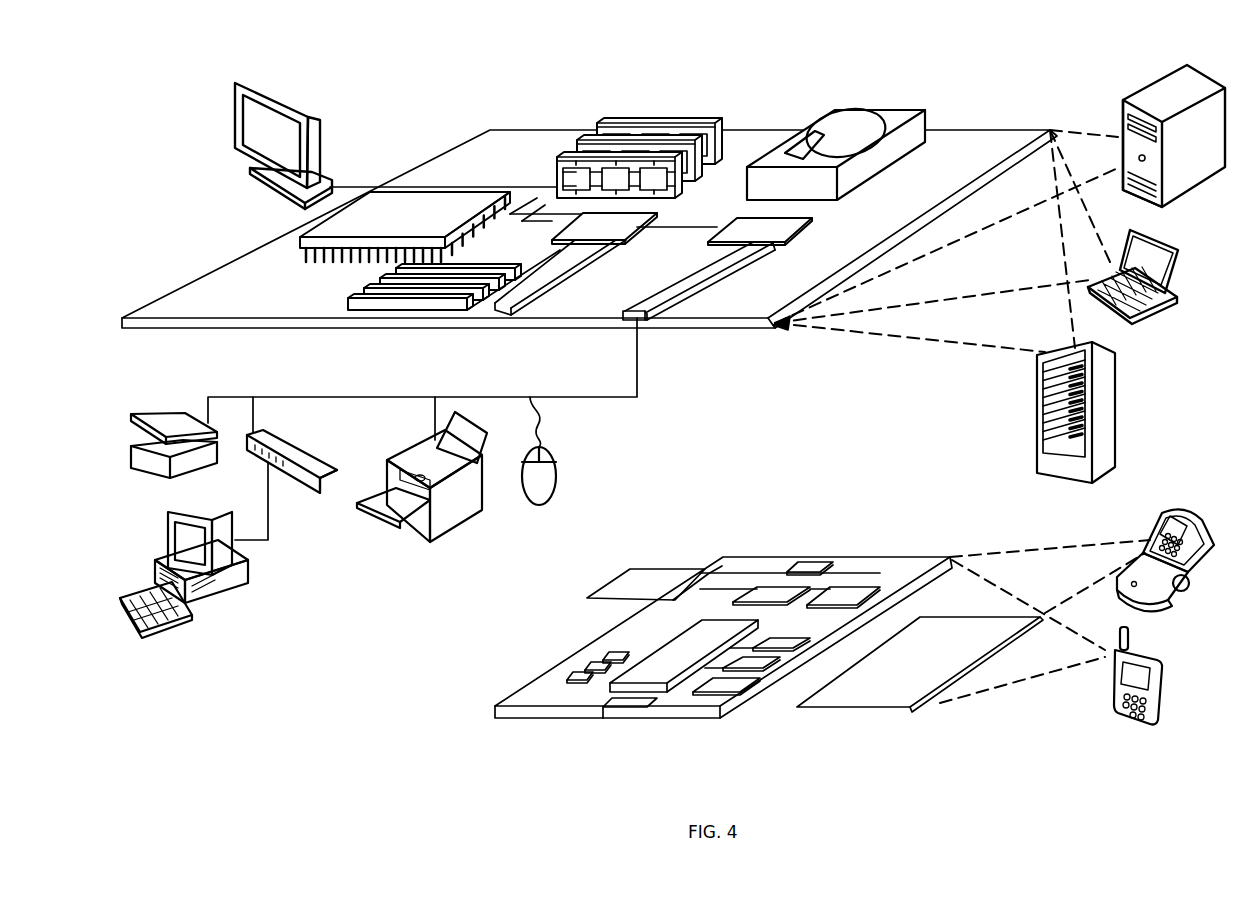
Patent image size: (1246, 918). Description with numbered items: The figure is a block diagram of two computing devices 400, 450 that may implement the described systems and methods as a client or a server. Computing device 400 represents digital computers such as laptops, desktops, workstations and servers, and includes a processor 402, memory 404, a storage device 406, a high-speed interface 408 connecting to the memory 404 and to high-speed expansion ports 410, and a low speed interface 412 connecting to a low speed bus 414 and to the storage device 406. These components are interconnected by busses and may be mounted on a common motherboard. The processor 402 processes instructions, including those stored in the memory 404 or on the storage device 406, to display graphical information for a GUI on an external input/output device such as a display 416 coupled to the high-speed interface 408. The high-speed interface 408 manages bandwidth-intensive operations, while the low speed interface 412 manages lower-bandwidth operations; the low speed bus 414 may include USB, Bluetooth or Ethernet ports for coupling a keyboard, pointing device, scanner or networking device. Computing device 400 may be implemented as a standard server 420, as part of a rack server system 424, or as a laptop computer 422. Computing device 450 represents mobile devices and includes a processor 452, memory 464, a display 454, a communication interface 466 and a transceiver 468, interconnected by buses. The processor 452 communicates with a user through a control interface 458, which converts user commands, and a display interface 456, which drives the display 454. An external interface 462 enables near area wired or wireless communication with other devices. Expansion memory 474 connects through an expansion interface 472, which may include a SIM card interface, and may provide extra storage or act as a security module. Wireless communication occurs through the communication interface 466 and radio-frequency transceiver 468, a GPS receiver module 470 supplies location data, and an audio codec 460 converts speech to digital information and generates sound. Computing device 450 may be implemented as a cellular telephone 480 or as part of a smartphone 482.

The computing device 400 is at (420, 102).
The processor 402 is at (302, 240).
The memory 404 is at (605, 138).
The storage device 406 is at (830, 115).
The high-speed interface 408 is at (580, 225).
The high-speed expansion ports 410 is at (365, 293).
The low speed interface 412 is at (738, 225).
The low speed bus 414 is at (650, 320).
The display 416 is at (236, 82).
The standard server 420 is at (1123, 115).
The laptop computer 422 is at (1178, 252).
The rack server system 424 is at (1037, 436).
The computing device 450 is at (476, 720).
The processor 452 is at (662, 682).
The display 454 is at (882, 690).
The display interface 456 is at (723, 690).
The control interface 458 is at (750, 666).
The audio codec 460 is at (780, 643).
The external interface 462 is at (626, 710).
The memory 464 is at (590, 674).
The communication interface 466 is at (770, 595).
The transceiver 468 is at (843, 592).
The GPS receiver module 470 is at (815, 565).
The expansion interface 472 is at (702, 572).
The expansion memory 474 is at (638, 572).
The cellular telephone 480 is at (1165, 520).
The smartphone 482 is at (1113, 690).